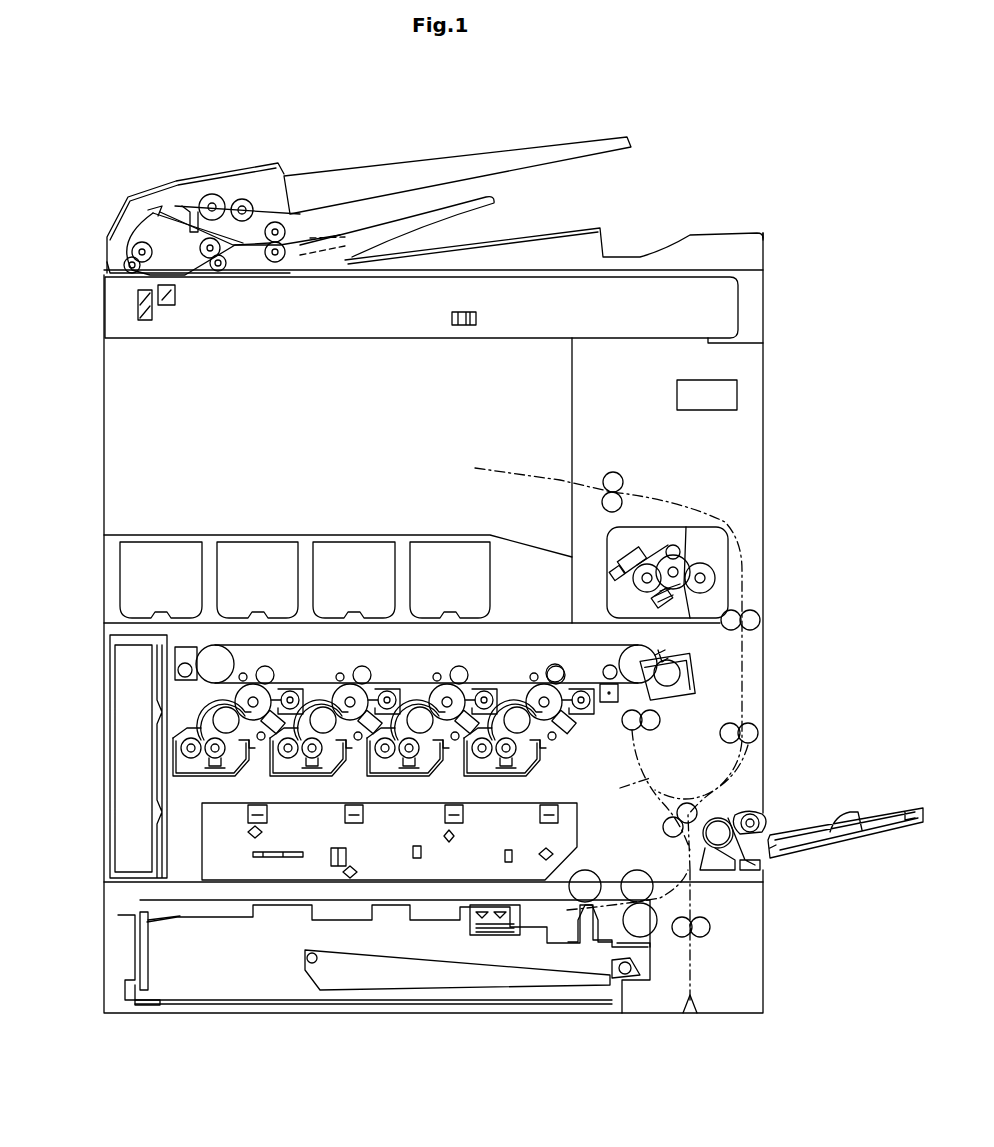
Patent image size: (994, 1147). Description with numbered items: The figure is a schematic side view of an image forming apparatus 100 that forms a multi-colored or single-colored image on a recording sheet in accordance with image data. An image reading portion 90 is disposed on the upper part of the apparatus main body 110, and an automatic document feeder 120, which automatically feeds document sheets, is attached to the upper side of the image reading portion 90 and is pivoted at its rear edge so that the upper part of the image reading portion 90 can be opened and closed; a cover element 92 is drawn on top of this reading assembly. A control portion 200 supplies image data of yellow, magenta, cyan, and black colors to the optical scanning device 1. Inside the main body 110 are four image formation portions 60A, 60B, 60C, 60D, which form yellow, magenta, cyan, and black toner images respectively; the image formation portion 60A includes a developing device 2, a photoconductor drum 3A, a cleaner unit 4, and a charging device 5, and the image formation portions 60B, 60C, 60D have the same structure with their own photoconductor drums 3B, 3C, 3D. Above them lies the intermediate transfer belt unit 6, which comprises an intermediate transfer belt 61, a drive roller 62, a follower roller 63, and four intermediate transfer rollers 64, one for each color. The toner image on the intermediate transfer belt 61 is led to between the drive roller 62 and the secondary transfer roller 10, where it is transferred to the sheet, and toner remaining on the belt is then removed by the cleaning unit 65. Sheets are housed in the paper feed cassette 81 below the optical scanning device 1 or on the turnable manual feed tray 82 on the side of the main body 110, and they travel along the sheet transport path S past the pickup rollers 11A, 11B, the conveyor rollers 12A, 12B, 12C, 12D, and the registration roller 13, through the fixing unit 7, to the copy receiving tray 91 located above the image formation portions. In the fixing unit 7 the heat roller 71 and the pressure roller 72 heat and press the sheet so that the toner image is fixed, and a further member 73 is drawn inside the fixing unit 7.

The image forming apparatus 100 is at (777, 183).
The apparatus main body 110 is at (90, 481).
The document feeder 120 is at (228, 165).
The image reading portion 90 is at (765, 313).
The platen cover 92 is at (525, 268).
The control portion 200 is at (737, 388).
The copy receiving tray 91 is at (215, 535).
The optical scanning device 1 is at (578, 826).
The developing device 2 is at (212, 722).
The photoconductor drum 3A is at (257, 688).
The photoconductor drum 3B is at (349, 683).
The photoconductor drum 3C is at (451, 688).
The photoconductor drum 3D is at (543, 683).
The cleaner unit 4 is at (292, 693).
The charging device 5 is at (228, 735).
The intermediate transfer belt unit 6 is at (426, 629).
The intermediate transfer belt 61 is at (547, 645).
The follower roller 63 is at (215, 650).
The intermediate transfer roller 64 is at (270, 672).
The cleaning unit 65 is at (190, 648).
The image formation portion 60A is at (173, 708).
The image formation portion 60B is at (335, 636).
The image formation portion 60C is at (432, 636).
The image formation portion 60D is at (517, 636).
The fixing unit 7 is at (714, 530).
The heat roller 71 is at (680, 562).
The pressure roller 72 is at (706, 578).
The heating member 73 is at (658, 557).
The secondary transfer roller 10 is at (672, 672).
The drive roller 62 is at (662, 660).
The registration roller 13 is at (656, 720).
The conveyor roller 12A is at (692, 812).
The conveyor roller 12B is at (615, 472).
The conveyor roller 12C is at (752, 619).
The conveyor roller 12D is at (757, 733).
The pickup roller 11A is at (580, 880).
The pickup roller 11B is at (765, 825).
The paper feed cassette 81 is at (260, 1005).
The manual feed tray 82 is at (862, 810).
The sheet transport path S is at (611, 734).